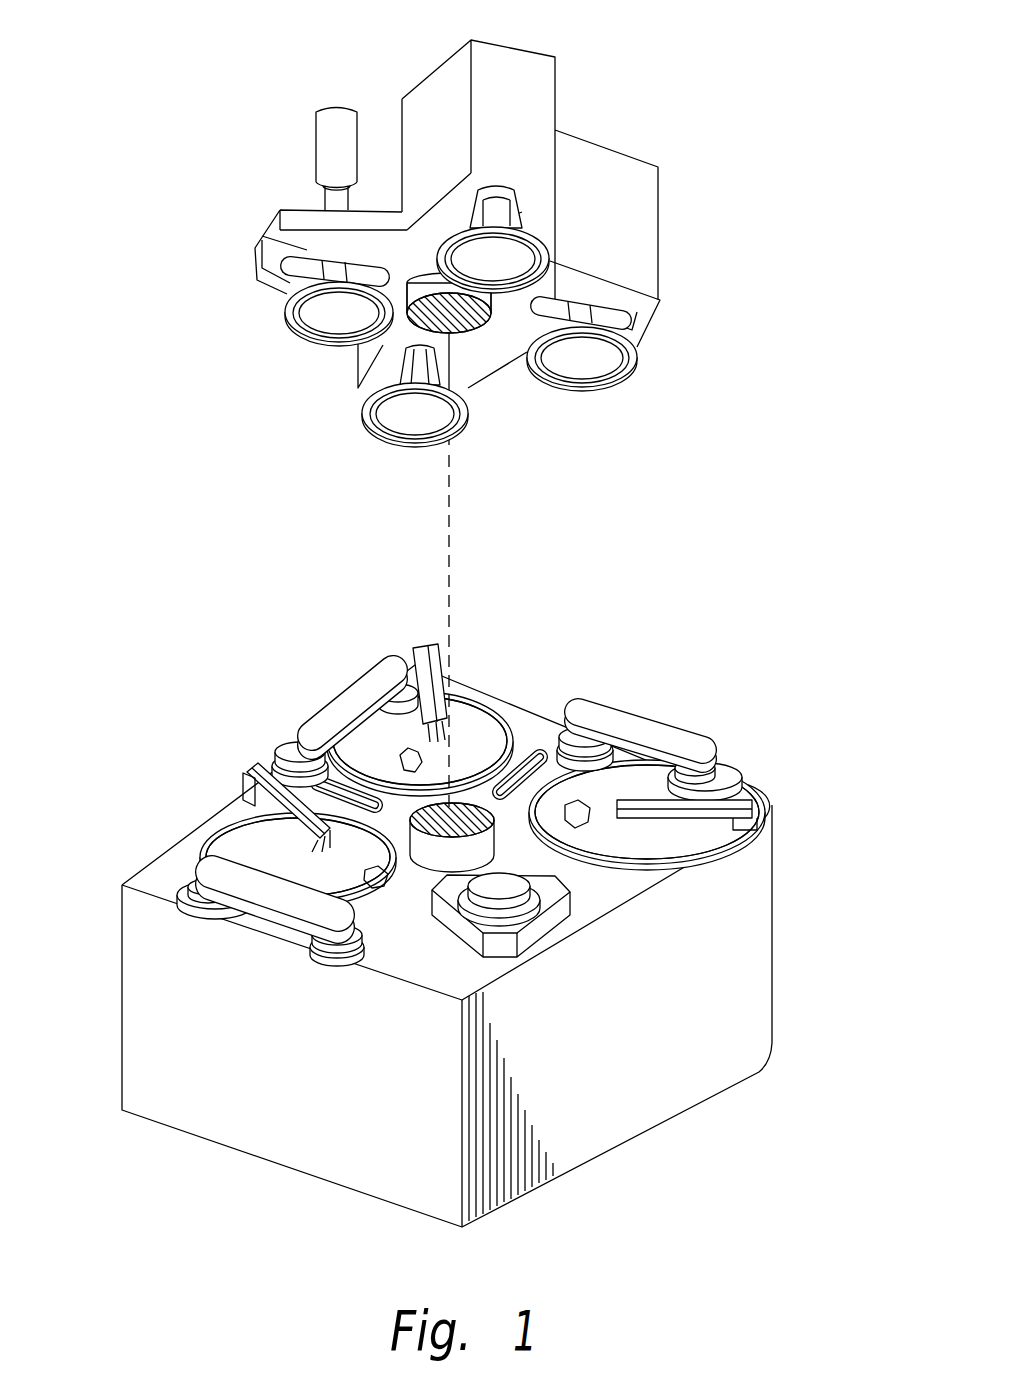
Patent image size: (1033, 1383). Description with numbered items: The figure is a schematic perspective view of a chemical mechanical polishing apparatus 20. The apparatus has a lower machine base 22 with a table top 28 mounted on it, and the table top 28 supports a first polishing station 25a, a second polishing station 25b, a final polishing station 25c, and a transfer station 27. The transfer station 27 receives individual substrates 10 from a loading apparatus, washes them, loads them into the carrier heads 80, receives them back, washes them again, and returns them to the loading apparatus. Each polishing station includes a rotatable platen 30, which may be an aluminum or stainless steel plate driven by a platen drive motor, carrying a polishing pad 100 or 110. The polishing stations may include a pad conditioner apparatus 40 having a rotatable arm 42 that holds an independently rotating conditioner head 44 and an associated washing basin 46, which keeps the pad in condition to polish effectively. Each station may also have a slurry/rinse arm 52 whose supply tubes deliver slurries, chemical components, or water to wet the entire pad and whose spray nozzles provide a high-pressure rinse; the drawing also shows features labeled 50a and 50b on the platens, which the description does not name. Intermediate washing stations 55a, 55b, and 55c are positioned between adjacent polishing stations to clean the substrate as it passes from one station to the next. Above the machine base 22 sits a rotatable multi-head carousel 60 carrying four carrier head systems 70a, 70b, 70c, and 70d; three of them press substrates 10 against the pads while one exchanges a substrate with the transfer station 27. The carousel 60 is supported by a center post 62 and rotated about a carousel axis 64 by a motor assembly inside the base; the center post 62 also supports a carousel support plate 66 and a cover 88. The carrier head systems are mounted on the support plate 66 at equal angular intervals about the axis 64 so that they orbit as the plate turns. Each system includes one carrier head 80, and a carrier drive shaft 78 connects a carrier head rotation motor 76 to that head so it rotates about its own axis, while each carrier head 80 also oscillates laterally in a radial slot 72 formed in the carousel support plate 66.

The chemical mechanical polishing apparatus 20 is at (714, 40).
The lower machine base 22 is at (133, 1040).
The first polishing station 25a is at (634, 869).
The second polishing station 25b is at (503, 704).
The final polishing station 25c is at (224, 797).
The transfer station 27 is at (448, 953).
The table top 28 is at (157, 872).
The rotatable platen 30 is at (480, 698).
The pad conditioner apparatus 40 is at (470, 811).
The rotatable arm 42 is at (357, 667).
The conditioner head 44 is at (398, 680).
The washing basin 46 is at (723, 767).
The slurry supply port 50a is at (410, 760).
The slurry supply port 50b is at (383, 885).
The slurry/rinse arm 52 is at (425, 655).
The intermediate washing station 55a is at (565, 708).
The intermediate washing station 55b is at (315, 773).
The intermediate washing station 55c is at (378, 940).
The rotatable multi-head carousel 60 is at (714, 280).
The center post 62 is at (468, 332).
The carousel axis 64 is at (458, 552).
The carousel support plate 66 is at (255, 249).
The carrier head system 70a is at (646, 369).
The carrier head system 70b is at (359, 435).
The carrier head system 70c is at (311, 343).
The carrier head system 70d is at (548, 250).
The radial slot 72 is at (508, 206).
The carrier head rotation motor 76 is at (318, 140).
The carrier drive shaft 78 is at (493, 205).
The carrier head 80 is at (578, 272).
The cover 88 is at (557, 76).
The substrate 10 is at (502, 257).
The polishing pad 100 is at (458, 712).
The polishing pad 110 is at (227, 836).